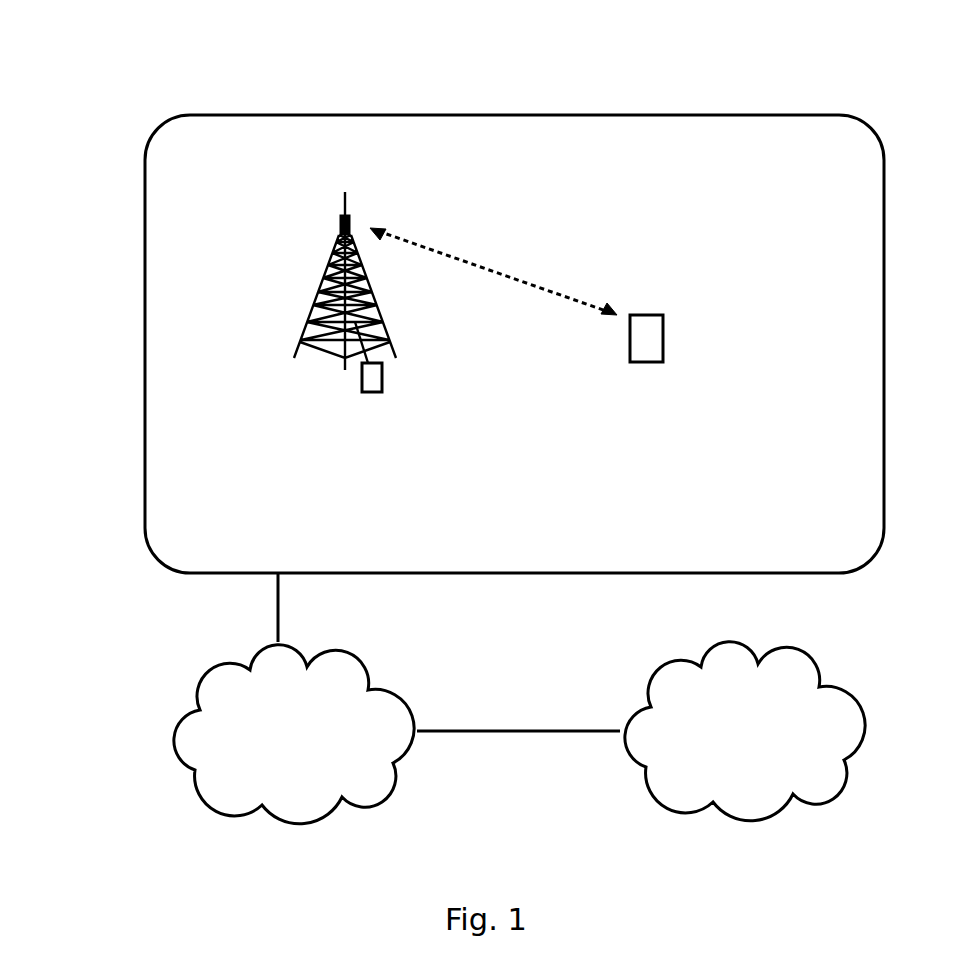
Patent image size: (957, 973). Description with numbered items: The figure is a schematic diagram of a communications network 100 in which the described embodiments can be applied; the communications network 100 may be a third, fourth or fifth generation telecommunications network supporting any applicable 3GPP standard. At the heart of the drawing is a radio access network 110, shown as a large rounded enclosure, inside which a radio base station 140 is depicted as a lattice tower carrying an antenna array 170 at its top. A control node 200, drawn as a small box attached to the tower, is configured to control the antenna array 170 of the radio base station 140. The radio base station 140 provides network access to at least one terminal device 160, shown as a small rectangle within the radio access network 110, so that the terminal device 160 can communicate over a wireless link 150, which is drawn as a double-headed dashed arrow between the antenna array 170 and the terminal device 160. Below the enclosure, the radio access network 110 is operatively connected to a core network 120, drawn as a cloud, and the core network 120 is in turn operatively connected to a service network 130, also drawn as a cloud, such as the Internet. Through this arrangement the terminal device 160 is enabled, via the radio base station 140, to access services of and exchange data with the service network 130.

The communications network 100 is at (239, 61).
The radio access network 110 is at (146, 395).
The core network 120 is at (320, 754).
The service network 130 is at (774, 749).
The radio base station 140 is at (281, 307).
The wireless link 150 is at (478, 268).
The terminal device 160 is at (648, 362).
The antenna array 170 is at (343, 207).
The control node 200 is at (341, 374).